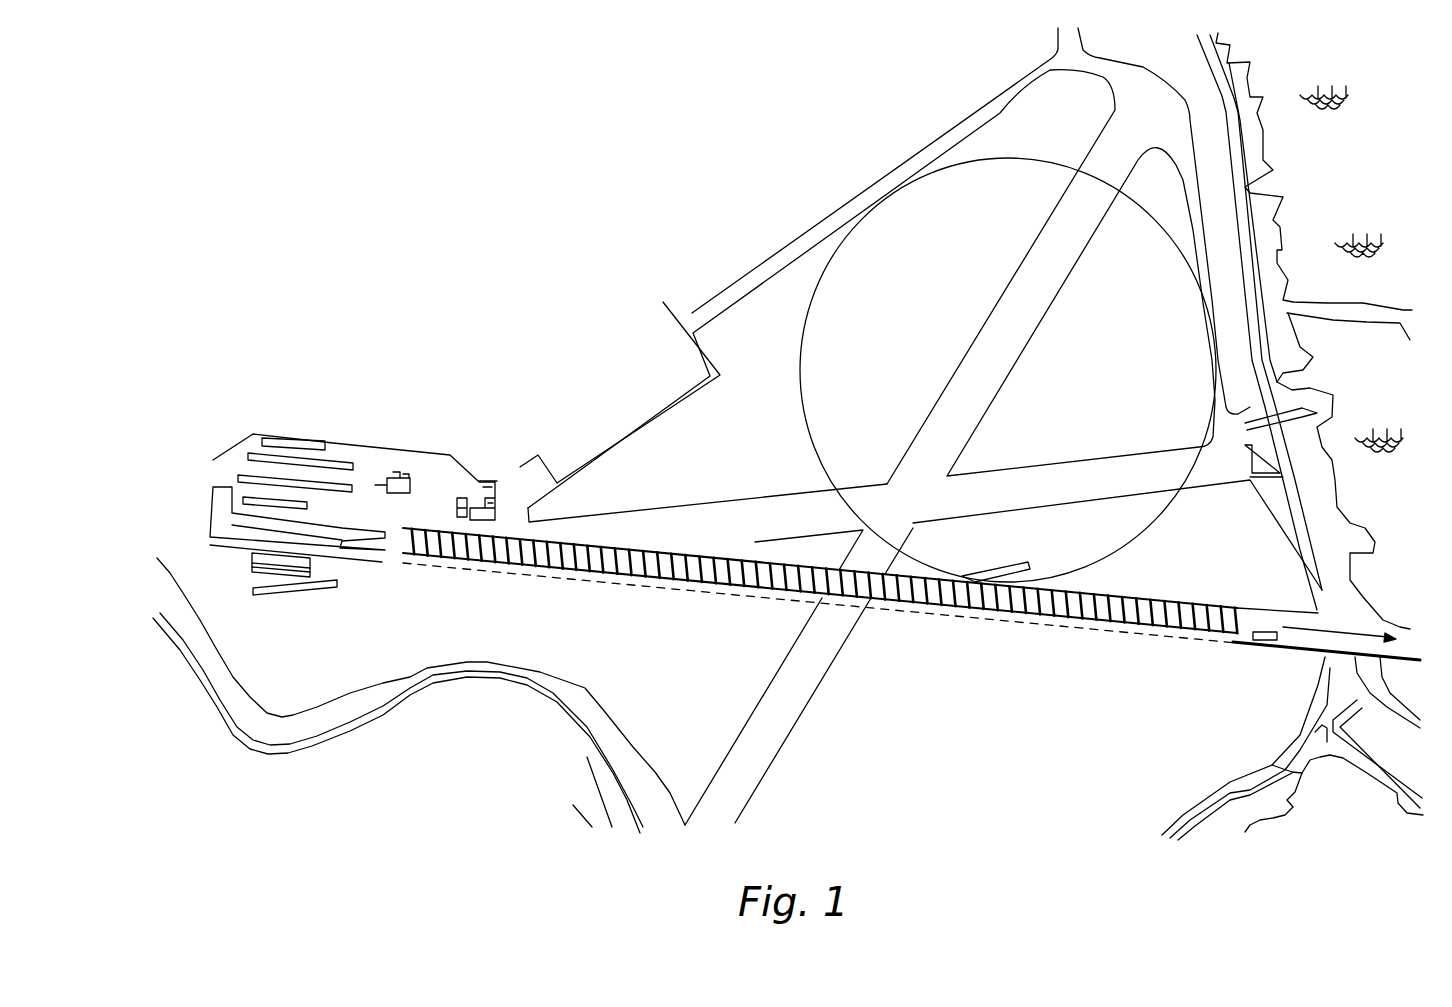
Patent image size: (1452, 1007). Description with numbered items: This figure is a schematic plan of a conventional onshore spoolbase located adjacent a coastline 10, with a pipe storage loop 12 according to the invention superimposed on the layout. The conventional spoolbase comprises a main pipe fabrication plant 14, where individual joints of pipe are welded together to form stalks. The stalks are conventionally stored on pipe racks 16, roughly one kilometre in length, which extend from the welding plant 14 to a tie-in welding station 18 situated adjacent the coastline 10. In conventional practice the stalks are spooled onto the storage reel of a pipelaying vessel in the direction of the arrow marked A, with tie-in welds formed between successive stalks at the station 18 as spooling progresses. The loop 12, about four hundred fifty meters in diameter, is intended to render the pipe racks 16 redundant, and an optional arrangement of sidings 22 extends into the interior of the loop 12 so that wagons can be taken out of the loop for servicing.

The coastline 10 is at (1283, 258).
The pipe storage loop 12 is at (807, 313).
The main pipe fabrication plant 14 is at (222, 458).
The pipe racks 16 is at (1100, 600).
The tie-in welding station 18 is at (1262, 628).
The sidings 22 is at (993, 580).